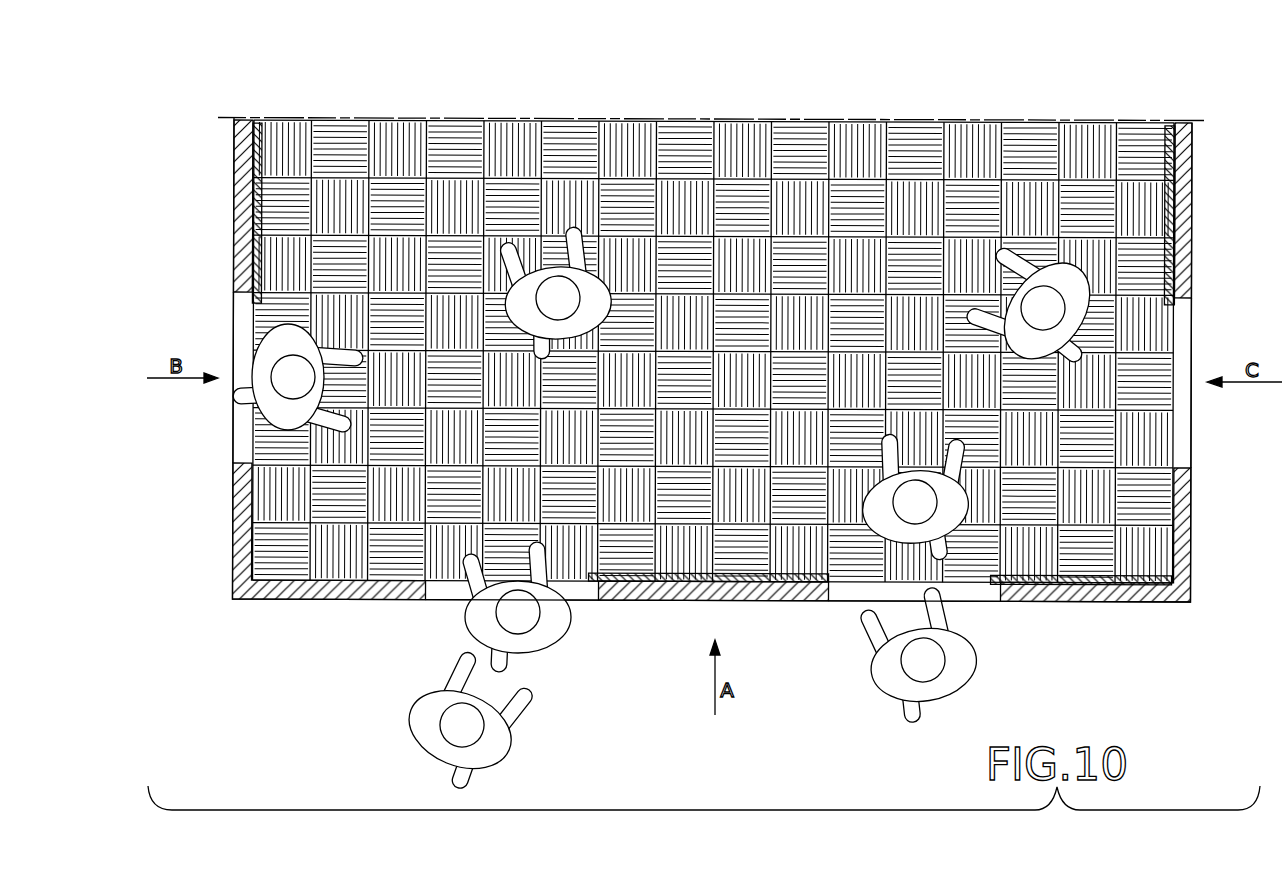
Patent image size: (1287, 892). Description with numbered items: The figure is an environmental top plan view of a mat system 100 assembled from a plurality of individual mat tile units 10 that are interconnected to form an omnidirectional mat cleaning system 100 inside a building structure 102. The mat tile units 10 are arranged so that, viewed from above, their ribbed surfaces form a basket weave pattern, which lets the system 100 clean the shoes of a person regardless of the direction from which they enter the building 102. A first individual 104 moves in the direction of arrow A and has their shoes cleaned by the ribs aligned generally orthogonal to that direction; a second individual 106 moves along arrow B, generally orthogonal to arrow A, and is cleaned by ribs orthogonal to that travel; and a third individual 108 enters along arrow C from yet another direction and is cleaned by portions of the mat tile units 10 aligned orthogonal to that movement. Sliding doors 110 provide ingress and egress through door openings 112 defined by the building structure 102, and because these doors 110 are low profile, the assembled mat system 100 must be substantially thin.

The mat tile unit 10 is at (335, 147).
The mat system 100 is at (1053, 104).
The building structure 102 is at (322, 612).
The first individual 104 is at (870, 535).
The second individual 106 is at (294, 414).
The third individual 108 is at (1085, 277).
The sliding door 110 is at (256, 205).
The door opening 112 is at (243, 312).